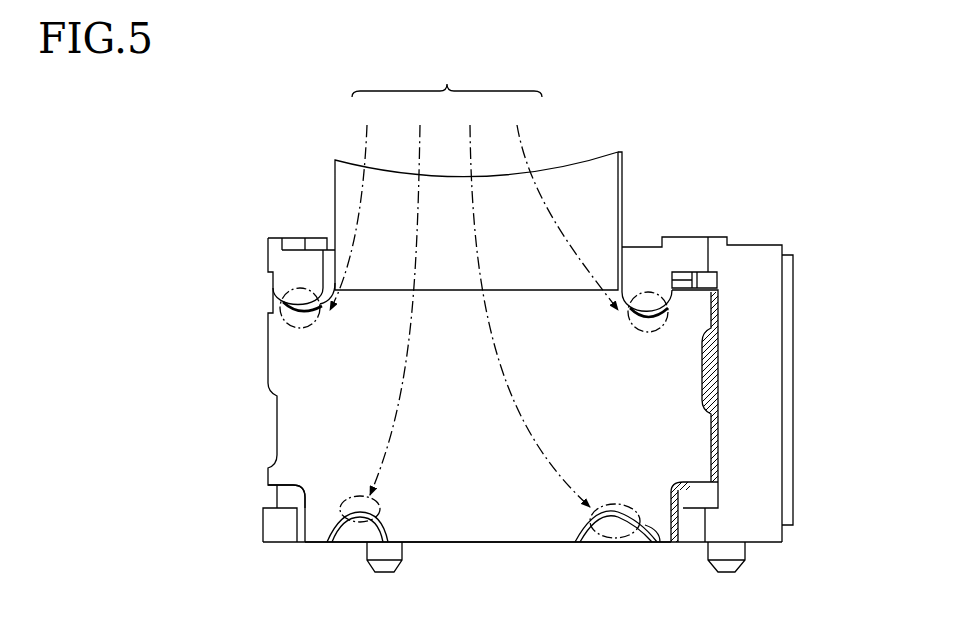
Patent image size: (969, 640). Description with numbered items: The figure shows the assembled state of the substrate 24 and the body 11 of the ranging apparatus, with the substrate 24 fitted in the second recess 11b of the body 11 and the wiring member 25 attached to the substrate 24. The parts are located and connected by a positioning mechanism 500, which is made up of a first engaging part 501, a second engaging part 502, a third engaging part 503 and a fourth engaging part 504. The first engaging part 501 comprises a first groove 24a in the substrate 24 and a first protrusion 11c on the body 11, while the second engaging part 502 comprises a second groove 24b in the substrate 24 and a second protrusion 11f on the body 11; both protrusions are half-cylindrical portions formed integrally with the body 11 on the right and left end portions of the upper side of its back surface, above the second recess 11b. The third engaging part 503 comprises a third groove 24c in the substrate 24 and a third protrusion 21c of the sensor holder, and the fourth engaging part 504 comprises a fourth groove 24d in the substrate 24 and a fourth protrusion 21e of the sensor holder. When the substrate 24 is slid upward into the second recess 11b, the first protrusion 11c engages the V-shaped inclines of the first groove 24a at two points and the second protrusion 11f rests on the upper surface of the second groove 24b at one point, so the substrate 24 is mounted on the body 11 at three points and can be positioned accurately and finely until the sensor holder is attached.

The body 11 is at (765, 520).
The second recess 11b is at (290, 495).
The first protrusion 11c is at (640, 272).
The second protrusion 11f is at (292, 277).
The third protrusion 21c is at (660, 537).
The fourth protrusion 21e is at (402, 540).
The substrate 24 is at (505, 517).
The first groove 24a is at (667, 312).
The second groove 24b is at (302, 312).
The third groove 24c is at (650, 528).
The fourth groove 24d is at (380, 520).
The wiring member 25 is at (615, 147).
The positioning mechanism 500 is at (447, 79).
The first engaging part 501 is at (562, 206).
The second engaging part 502 is at (357, 206).
The third engaging part 503 is at (523, 304).
The fourth engaging part 504 is at (404, 298).